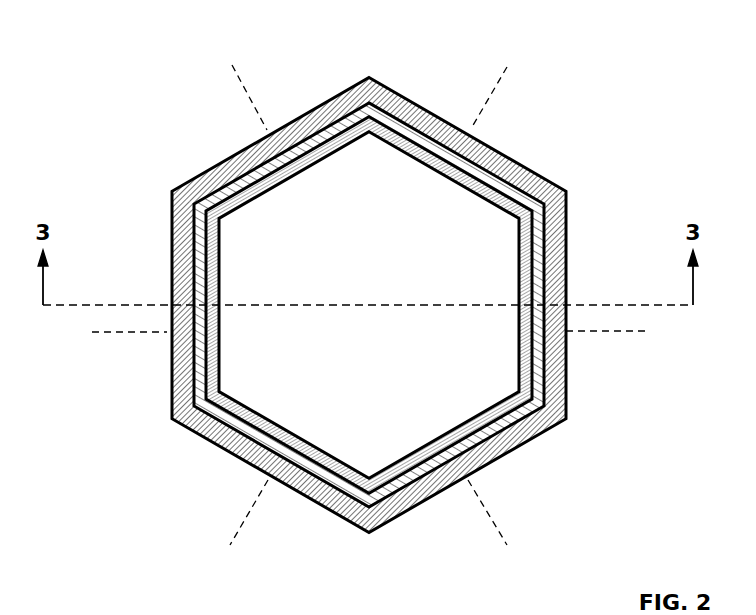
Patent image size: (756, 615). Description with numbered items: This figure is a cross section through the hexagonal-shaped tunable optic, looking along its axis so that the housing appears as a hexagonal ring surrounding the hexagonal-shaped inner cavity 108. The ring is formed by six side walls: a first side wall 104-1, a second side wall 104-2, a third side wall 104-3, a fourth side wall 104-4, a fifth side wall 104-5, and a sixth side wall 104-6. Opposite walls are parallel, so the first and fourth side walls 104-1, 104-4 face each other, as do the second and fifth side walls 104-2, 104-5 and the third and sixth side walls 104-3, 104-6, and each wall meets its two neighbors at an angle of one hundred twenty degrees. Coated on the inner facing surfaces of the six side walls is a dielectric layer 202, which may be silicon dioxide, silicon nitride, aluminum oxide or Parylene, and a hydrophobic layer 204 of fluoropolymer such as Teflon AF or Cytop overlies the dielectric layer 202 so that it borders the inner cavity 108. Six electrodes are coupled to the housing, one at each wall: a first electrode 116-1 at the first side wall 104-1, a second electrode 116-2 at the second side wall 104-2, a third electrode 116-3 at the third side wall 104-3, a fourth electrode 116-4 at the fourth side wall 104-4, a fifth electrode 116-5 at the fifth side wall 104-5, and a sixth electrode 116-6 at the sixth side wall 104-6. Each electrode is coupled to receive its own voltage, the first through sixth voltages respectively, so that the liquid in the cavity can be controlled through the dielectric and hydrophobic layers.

The first side wall 104-1 is at (322, 105).
The second side wall 104-2 is at (172, 247).
The third side wall 104-3 is at (212, 445).
The fourth side wall 104-4 is at (407, 513).
The fifth side wall 104-5 is at (566, 370).
The sixth side wall 104-6 is at (502, 153).
The first electrode 116-1 is at (238, 80).
The second electrode 116-2 is at (108, 332).
The third electrode 116-3 is at (238, 532).
The fourth electrode 116-4 is at (502, 535).
The fifth electrode 116-5 is at (630, 332).
The sixth electrode 116-6 is at (487, 100).
The hexagonal-shaped inner cavity 108 is at (349, 355).
The dielectric layer 202 is at (480, 422).
The hydrophobic layer 204 is at (515, 425).